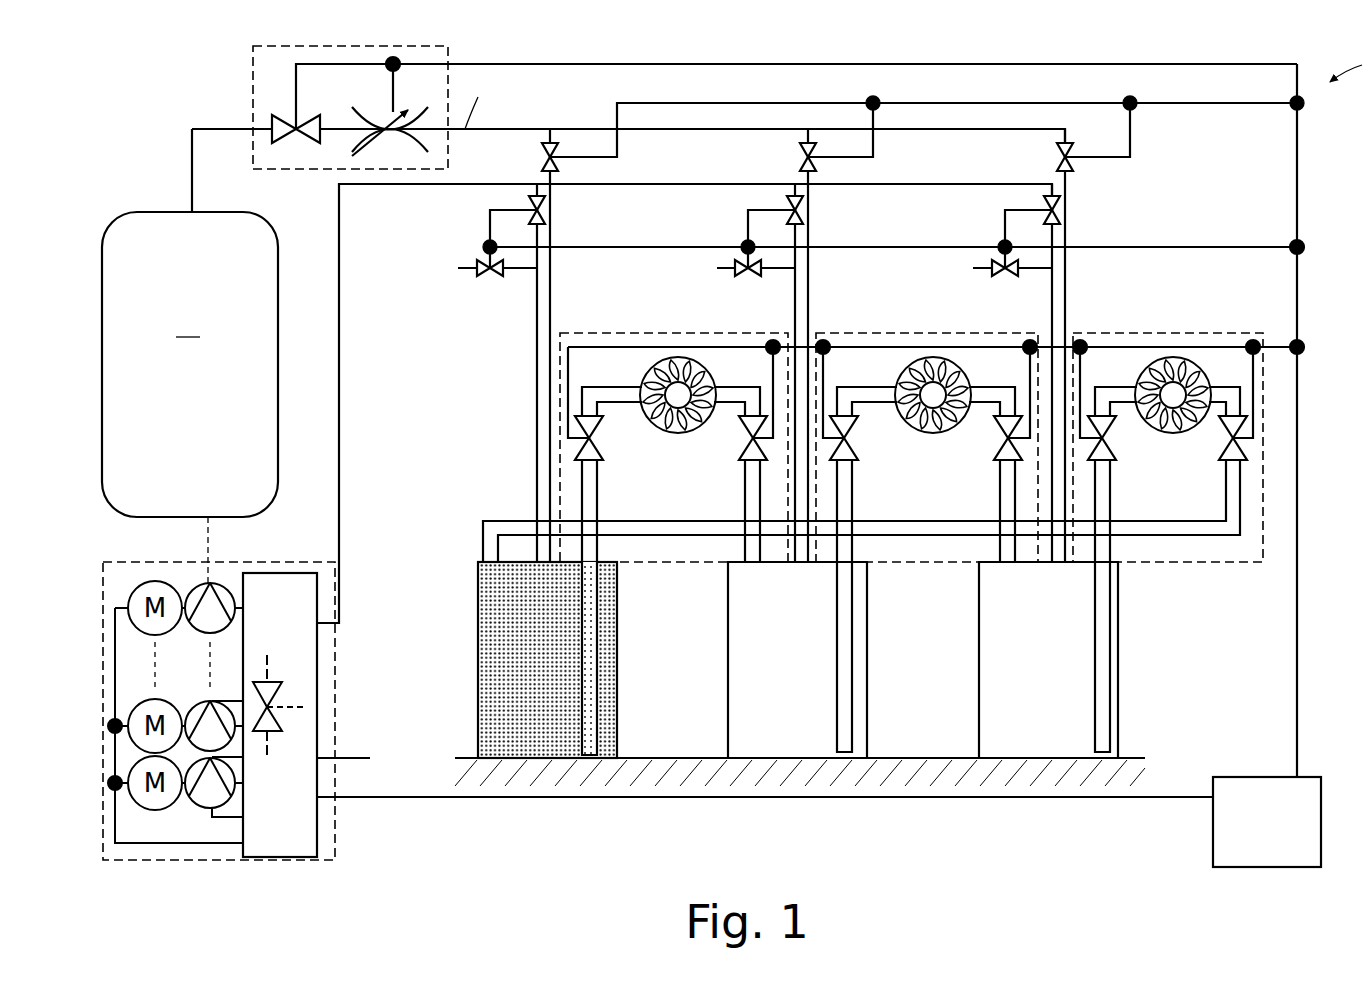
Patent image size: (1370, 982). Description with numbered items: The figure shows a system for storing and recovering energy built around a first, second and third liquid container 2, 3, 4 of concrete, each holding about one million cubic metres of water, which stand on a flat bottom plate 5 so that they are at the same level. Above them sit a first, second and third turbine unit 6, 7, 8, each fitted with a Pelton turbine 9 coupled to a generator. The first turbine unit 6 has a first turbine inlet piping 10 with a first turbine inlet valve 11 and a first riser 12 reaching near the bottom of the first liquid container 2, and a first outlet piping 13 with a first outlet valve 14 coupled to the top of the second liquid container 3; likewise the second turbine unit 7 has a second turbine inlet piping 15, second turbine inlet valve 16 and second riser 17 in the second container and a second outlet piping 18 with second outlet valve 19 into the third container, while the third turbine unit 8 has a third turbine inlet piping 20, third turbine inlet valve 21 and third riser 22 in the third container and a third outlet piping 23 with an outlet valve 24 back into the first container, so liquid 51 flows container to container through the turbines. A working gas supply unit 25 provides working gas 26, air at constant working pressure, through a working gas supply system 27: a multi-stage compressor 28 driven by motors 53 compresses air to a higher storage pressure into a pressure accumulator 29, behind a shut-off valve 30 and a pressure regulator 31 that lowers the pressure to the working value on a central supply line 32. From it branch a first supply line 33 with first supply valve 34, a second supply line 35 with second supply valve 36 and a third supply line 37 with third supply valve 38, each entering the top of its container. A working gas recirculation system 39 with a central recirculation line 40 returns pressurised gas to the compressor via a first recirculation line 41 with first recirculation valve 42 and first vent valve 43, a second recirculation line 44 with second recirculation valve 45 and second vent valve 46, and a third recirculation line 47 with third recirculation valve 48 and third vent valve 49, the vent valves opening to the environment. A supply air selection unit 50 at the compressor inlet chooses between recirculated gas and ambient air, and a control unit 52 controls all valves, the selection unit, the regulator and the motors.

The first liquid container 2 is at (478, 598).
The second liquid container 3 is at (728, 593).
The third liquid container 4 is at (979, 630).
The bottom plate 5 is at (444, 768).
The first turbine unit 6 is at (605, 333).
The second turbine unit 7 is at (870, 333).
The third turbine unit 8 is at (1120, 333).
The Pelton turbine 9 is at (678, 433).
The first turbine inlet piping 10 is at (595, 387).
The first turbine inlet valve 11 is at (589, 440).
The first riser 12 is at (600, 625).
The first outlet piping 13 is at (749, 387).
The first outlet valve 14 is at (753, 440).
The second turbine inlet piping 15 is at (850, 387).
The second turbine inlet valve 16 is at (844, 440).
The second riser 17 is at (837, 625).
The second outlet piping 18 is at (1005, 387).
The second outlet valve 19 is at (1008, 440).
The third turbine inlet piping 20 is at (1103, 387).
The third turbine inlet valve 21 is at (1102, 440).
The third riser 22 is at (1096, 640).
The third outlet piping 23 is at (1235, 387).
The outlet valve 24 is at (1233, 440).
The working gas supply unit 25 is at (167, 100).
The working gas 26 is at (190, 399).
The working gas supply system 27 is at (213, 122).
The compressor 28 is at (118, 562).
The pressure accumulator 29 is at (140, 210).
The shut-off valve 30 is at (296, 142).
The pressure regulator 31 is at (380, 120).
The central supply line 32 is at (500, 129).
The first supply line 33 is at (552, 212).
The first supply valve 34 is at (542, 157).
The second supply line 35 is at (810, 215).
The second supply valve 36 is at (800, 157).
The third supply line 37 is at (1067, 210).
The third supply valve 38 is at (1057, 157).
The working gas recirculation system 39 is at (335, 278).
The central recirculation line 40 is at (341, 390).
The first recirculation line 41 is at (535, 340).
The first recirculation valve 42 is at (529, 210).
The first vent valve 43 is at (485, 275).
The second recirculation line 44 is at (795, 288).
The second recirculation valve 45 is at (787, 210).
The second vent valve 46 is at (740, 275).
The third recirculation line 47 is at (1052, 290).
The third recirculation valve 48 is at (1044, 210).
The third vent valve 49 is at (998, 275).
The supply air selection unit 50 is at (320, 677).
The liquid 51 is at (478, 647).
The control unit 52 is at (1213, 825).
The motors 53 is at (136, 706).